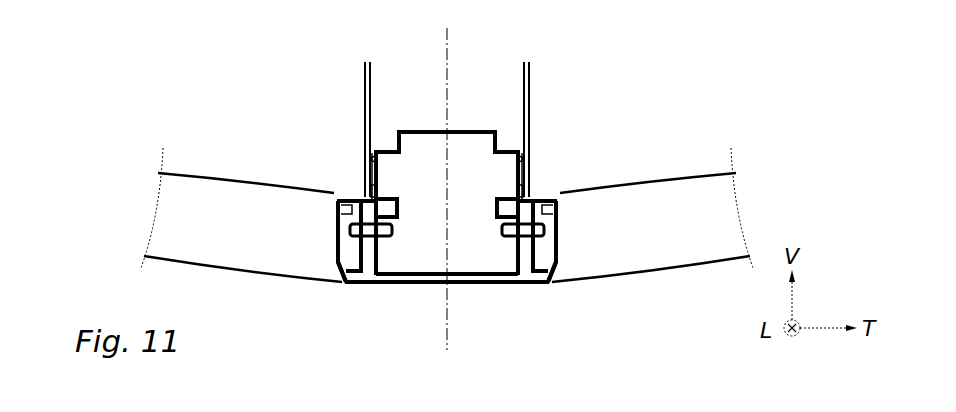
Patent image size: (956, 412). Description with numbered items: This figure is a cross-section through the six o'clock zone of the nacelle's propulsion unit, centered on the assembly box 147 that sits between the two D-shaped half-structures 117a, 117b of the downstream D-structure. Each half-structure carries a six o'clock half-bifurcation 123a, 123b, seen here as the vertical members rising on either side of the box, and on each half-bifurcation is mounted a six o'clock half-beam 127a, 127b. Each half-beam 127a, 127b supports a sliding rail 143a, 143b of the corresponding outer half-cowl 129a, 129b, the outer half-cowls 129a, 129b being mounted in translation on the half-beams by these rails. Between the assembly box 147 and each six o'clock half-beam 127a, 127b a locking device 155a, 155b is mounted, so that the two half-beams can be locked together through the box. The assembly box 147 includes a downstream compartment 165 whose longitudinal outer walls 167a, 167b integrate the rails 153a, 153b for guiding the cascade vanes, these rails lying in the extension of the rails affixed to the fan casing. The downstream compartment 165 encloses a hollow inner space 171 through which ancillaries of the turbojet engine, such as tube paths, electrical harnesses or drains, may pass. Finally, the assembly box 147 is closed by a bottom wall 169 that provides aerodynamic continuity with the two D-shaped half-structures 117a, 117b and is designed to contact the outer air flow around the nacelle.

The D-shaped half-structure 117a is at (703, 168).
The D-shaped half-structure 117b is at (191, 168).
The six o'clock half-bifurcation 123a is at (530, 84).
The six o'clock half-bifurcation 123b is at (364, 84).
The six o'clock half-beam 127a is at (563, 210).
The six o'clock half-beam 127b is at (331, 210).
The outer half-cowl 129a is at (675, 205).
The outer half-cowl 129b is at (219, 205).
The sliding rail 143a is at (556, 200).
The sliding rail 143b is at (338, 200).
The assembly box 147 is at (408, 295).
The rail for guiding the cascade vanes 153a is at (561, 272).
The rail for guiding the cascade vanes 153b is at (333, 272).
The locking device 155a is at (521, 285).
The locking device 155b is at (372, 285).
The downstream compartment 165 is at (474, 284).
The longitudinal outer wall 167a is at (539, 268).
The longitudinal outer wall 167b is at (355, 268).
The bottom wall 169 is at (435, 284).
The hollow inner space 171 is at (427, 150).